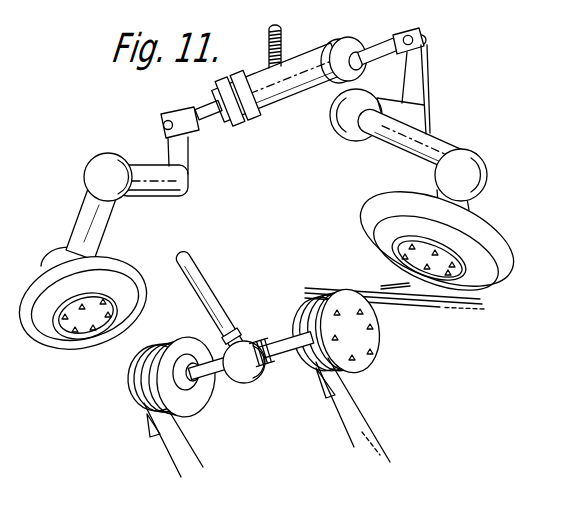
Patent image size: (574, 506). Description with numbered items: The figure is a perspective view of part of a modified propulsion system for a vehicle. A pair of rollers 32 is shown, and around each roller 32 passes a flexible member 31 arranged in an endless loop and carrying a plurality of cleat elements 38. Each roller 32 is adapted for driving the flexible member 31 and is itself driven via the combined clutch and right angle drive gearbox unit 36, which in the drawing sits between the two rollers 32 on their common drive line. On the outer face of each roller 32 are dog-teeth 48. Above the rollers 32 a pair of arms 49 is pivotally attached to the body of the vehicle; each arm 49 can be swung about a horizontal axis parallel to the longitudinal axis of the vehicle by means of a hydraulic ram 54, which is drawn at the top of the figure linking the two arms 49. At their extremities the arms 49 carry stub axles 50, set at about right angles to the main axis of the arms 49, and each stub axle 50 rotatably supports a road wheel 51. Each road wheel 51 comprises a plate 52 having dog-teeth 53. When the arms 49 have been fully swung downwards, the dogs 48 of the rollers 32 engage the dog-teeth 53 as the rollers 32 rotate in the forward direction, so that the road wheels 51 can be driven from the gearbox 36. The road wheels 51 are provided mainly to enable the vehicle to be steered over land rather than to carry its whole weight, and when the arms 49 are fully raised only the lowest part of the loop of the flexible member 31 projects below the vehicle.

The flexible member 31 is at (433, 305).
The roller 32 is at (373, 348).
The combined clutch and right angle drive gearbox unit 36 is at (248, 380).
The cleat element 38 is at (152, 428).
The dog-teeth 48 is at (368, 356).
The arm 49 is at (142, 172).
The stub axle 50 is at (466, 206).
The road wheel 51 is at (121, 265).
The plate 52 is at (455, 278).
The dog-teeth 53 is at (96, 338).
The hydraulic ram 54 is at (305, 58).